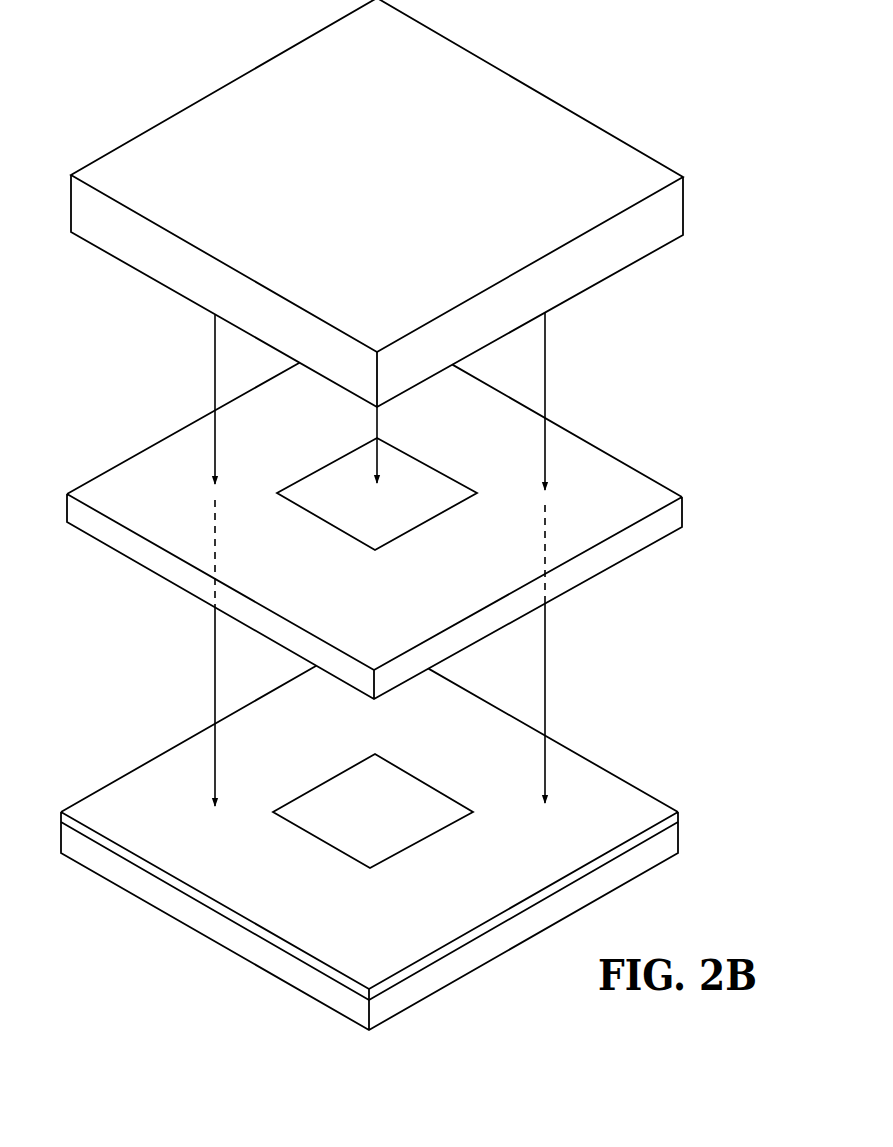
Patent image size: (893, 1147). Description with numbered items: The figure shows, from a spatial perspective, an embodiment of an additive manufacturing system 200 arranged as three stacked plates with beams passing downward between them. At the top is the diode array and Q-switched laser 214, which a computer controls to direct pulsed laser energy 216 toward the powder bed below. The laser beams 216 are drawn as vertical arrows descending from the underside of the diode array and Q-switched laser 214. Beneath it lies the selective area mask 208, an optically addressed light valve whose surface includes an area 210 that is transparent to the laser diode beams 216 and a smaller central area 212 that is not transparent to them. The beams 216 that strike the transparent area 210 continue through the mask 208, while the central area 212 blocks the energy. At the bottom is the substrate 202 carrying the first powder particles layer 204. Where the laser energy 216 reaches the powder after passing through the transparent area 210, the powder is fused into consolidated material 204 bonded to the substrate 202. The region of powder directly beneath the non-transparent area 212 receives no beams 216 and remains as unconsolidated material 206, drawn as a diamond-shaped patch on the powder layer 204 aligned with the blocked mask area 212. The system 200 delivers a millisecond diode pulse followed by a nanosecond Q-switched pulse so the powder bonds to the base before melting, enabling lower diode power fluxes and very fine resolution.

The additive manufacturing system embodiment 200 is at (641, 106).
The substrate 202 is at (282, 965).
The first powder particles layer 204 is at (341, 914).
The unconsolidated material 206 is at (398, 829).
The selective area mask 208 is at (684, 469).
The area of mask transparent to laser diode beams 210 is at (491, 581).
The area of mask not transparent to laser diode beams 212 is at (391, 526).
The diode array and Q-switched laser 214 is at (469, 207).
The diode and Q-switched laser beam 216 is at (380, 421).